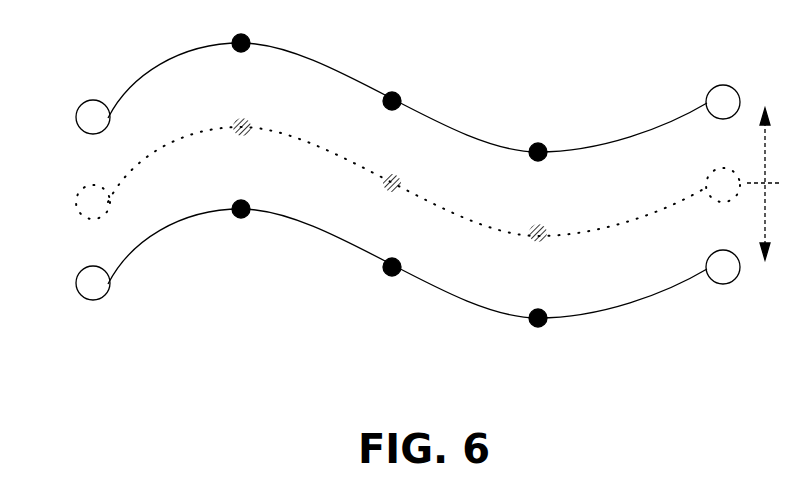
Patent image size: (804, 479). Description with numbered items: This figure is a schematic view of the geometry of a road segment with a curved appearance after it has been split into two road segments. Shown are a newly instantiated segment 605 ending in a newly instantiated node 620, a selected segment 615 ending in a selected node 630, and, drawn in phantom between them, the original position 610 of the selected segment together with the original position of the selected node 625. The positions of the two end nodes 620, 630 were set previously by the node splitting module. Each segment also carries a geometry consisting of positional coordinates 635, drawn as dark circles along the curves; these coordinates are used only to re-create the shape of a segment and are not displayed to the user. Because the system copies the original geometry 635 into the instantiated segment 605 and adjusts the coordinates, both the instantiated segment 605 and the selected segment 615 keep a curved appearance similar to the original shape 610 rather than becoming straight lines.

The newly instantiated segment 605 is at (66, 82).
The original position of the selected segment 610 is at (73, 165).
The selected segment 615 is at (73, 247).
The newly instantiated node 620 is at (710, 89).
The original position of the selected node 625 is at (710, 172).
The selected node 630 is at (710, 254).
The positional coordinates 635 is at (241, 117).